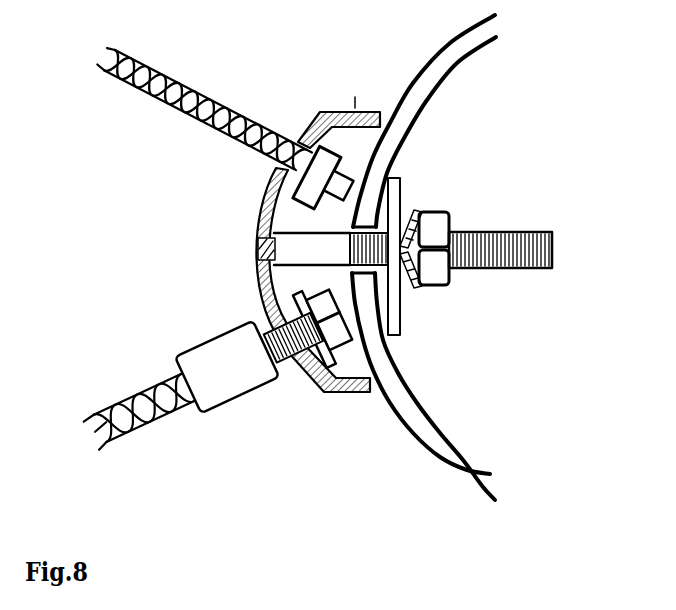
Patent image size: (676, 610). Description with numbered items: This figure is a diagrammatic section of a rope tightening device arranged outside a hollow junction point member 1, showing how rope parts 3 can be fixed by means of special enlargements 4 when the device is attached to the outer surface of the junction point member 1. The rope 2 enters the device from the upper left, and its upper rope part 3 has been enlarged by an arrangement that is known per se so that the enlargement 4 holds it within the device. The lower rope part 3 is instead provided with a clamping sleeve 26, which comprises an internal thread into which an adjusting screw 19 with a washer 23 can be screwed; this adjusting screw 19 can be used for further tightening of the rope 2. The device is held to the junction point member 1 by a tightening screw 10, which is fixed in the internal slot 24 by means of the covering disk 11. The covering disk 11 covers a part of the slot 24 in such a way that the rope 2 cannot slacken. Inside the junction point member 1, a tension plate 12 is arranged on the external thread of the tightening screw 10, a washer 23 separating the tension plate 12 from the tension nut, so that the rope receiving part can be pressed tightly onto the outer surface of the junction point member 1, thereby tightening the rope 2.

The junction point member 1 is at (488, 25).
The rope 2 is at (107, 74).
The rope part 3 is at (345, 173).
The special enlargement 4 is at (300, 146).
The tightening screw 10 is at (297, 249).
The covering disk 11 is at (266, 189).
The tension plate 12 is at (403, 197).
The adjusting screw 19 is at (288, 365).
The washer 23 is at (340, 348).
The slot 24 is at (262, 294).
The clamping sleeve 26 is at (212, 388).